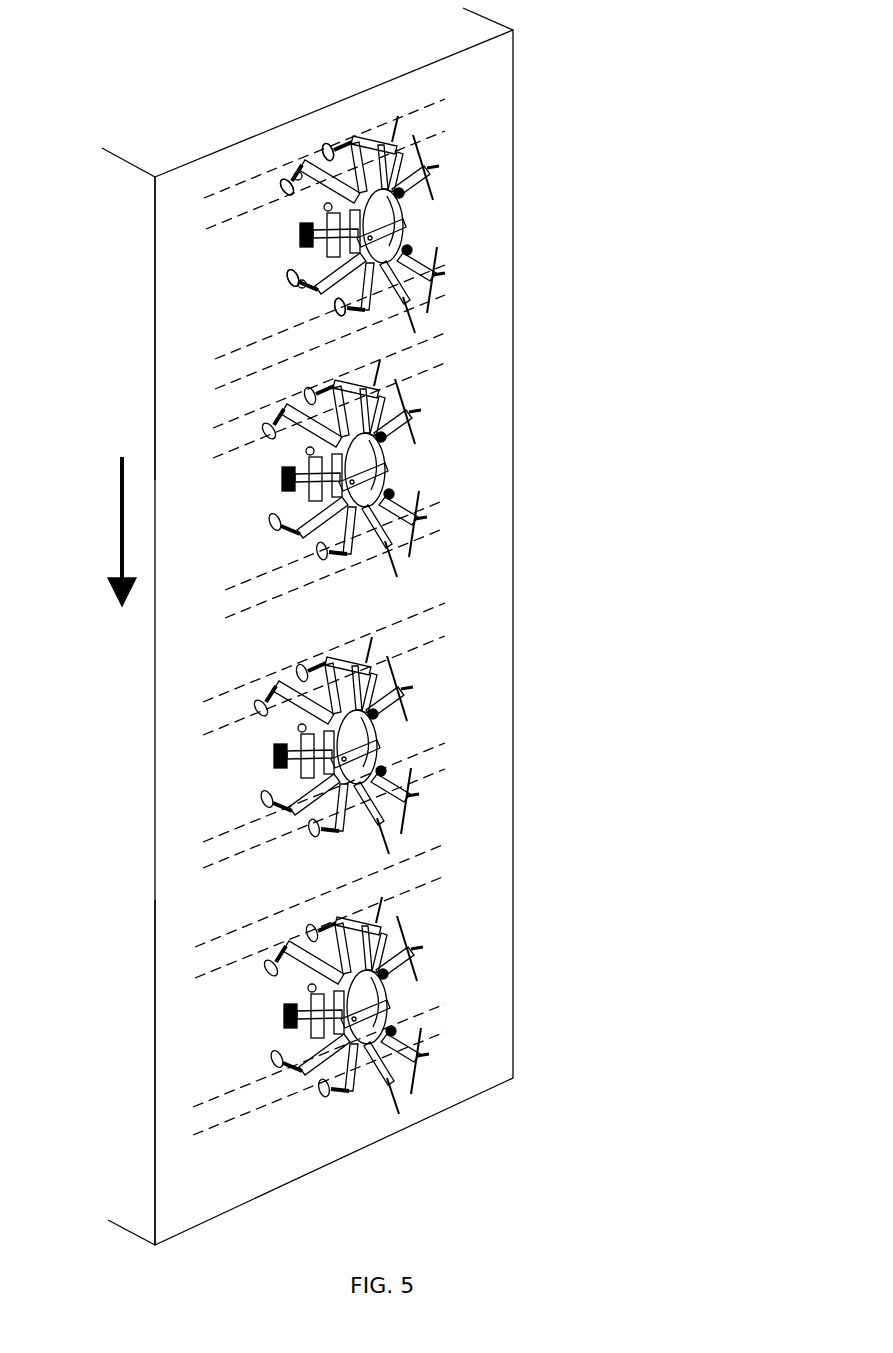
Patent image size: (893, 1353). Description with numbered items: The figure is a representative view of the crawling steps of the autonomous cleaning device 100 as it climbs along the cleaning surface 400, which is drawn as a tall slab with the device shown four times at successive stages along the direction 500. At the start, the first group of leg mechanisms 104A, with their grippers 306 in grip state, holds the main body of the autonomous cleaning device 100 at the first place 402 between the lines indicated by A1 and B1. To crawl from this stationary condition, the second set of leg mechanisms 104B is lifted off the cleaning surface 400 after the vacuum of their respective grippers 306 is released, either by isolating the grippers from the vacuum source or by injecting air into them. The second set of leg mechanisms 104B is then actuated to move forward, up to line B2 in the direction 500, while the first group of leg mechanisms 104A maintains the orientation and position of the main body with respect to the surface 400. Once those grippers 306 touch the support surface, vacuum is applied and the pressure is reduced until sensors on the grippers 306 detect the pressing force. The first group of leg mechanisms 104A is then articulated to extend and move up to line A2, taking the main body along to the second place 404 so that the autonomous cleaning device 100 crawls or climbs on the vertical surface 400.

The autonomous cleaning device 100 is at (442, 216).
The first group of leg mechanisms 104A is at (328, 148).
The second set of leg mechanisms 104B is at (298, 277).
The gripper 306 is at (290, 193).
The cleaning surface 400 is at (513, 725).
The first place 402 is at (213, 283).
The second place 404 is at (224, 1033).
The direction 500 is at (113, 530).
The line A1 is at (306, 532).
The line A2 is at (306, 562).
The line B1 is at (306, 695).
The line B2 is at (306, 720).